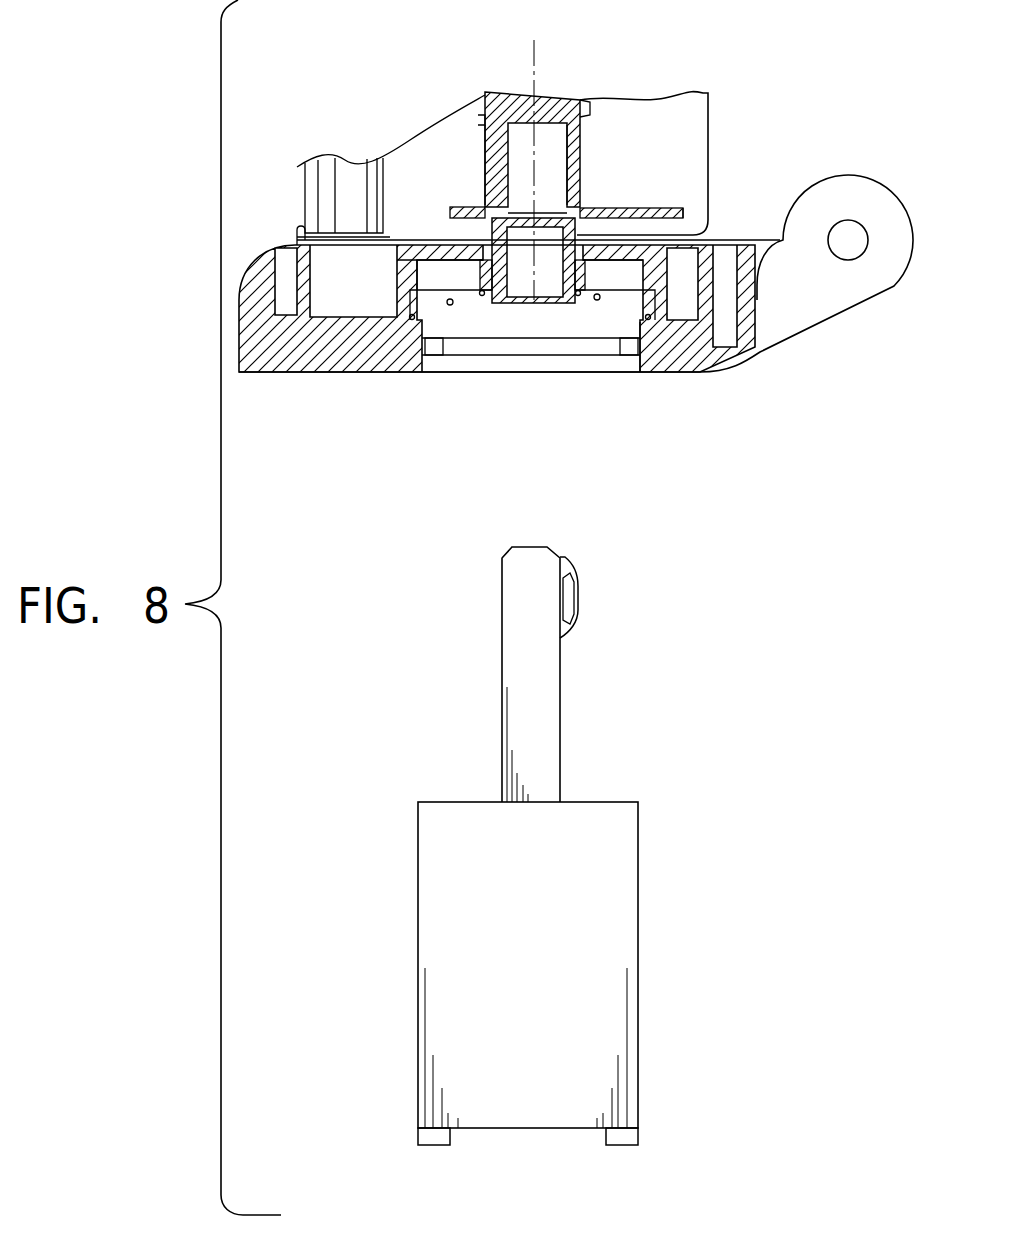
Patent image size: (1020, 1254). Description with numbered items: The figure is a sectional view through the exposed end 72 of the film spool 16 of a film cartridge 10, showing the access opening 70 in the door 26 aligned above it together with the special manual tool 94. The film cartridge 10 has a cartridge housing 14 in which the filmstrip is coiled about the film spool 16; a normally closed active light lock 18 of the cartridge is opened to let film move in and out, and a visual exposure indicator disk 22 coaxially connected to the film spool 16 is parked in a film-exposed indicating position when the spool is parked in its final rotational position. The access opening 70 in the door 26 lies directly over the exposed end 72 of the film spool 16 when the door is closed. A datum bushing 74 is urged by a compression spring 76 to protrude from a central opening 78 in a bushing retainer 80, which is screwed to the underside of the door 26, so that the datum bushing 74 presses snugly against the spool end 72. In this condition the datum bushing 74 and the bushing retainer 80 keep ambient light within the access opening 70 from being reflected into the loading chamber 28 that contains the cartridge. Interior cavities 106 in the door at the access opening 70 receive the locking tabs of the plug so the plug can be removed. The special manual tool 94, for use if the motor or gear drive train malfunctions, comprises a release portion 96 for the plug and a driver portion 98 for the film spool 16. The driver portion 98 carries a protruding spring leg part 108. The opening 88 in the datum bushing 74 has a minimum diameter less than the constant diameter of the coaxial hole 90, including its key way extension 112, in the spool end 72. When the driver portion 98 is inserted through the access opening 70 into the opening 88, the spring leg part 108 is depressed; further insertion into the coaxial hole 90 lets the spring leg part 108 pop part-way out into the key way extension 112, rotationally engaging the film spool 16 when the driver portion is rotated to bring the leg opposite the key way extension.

The film cartridge 10 is at (738, 103).
The cartridge housing 14 is at (714, 195).
The film spool 16 is at (496, 90).
The active light lock 18 is at (318, 198).
The visual exposure indicator disk 22 is at (661, 210).
The door 26 is at (340, 368).
The loading chamber 28 is at (302, 222).
The access opening 70 is at (630, 366).
The exposed end 72 is at (485, 208).
The datum bushing 74 is at (566, 248).
The compression spring 76 is at (596, 302).
The central opening 78 is at (586, 224).
The bushing retainer 80 is at (398, 262).
The opening 88 is at (523, 298).
The coaxial hole 90 is at (490, 150).
The special manual tool 94 is at (684, 955).
The release portion 96 is at (418, 1122).
The driver portion 98 is at (500, 735).
The interior cavities 106 is at (630, 357).
The spring leg part 108 is at (579, 595).
The key way extension 112 is at (580, 166).